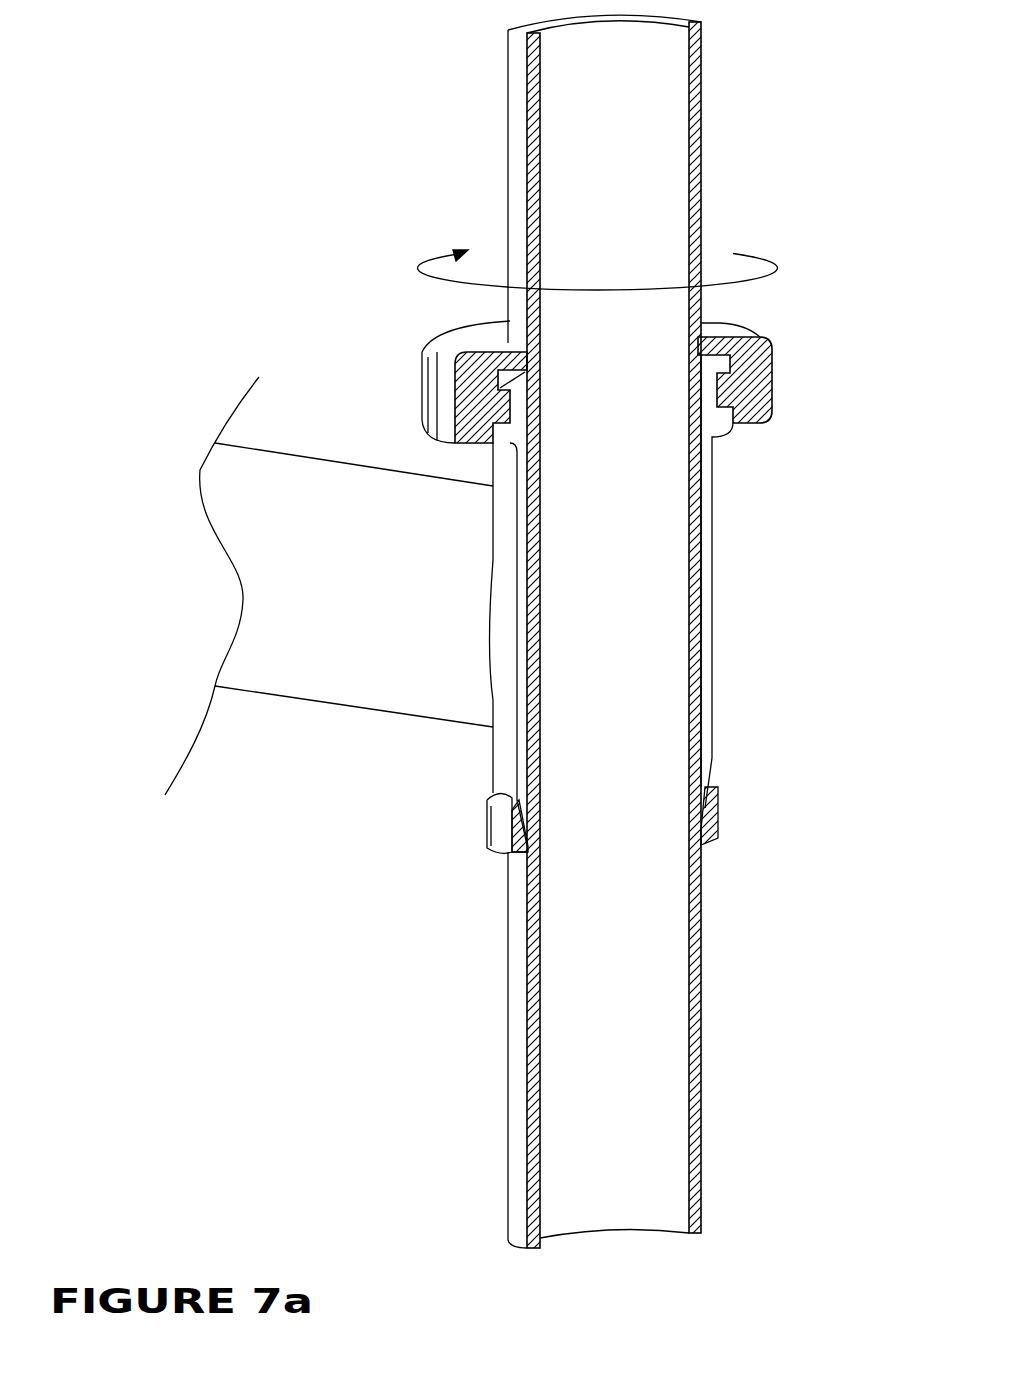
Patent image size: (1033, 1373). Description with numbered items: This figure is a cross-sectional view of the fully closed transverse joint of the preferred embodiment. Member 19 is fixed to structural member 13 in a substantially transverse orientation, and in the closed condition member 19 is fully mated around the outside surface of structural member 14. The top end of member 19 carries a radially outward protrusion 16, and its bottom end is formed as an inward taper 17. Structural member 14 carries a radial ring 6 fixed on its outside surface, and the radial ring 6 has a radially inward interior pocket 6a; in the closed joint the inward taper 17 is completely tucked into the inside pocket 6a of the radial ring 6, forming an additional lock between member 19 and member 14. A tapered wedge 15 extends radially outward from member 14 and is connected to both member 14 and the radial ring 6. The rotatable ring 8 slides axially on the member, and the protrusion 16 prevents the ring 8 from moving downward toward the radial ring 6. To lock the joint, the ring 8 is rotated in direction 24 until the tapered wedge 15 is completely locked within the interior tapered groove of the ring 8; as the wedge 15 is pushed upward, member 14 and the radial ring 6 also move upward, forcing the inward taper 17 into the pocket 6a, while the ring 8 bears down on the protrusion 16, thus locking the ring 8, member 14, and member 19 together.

The structural member 14 is at (608, 1205).
The rotatable ring 8 is at (440, 350).
The tapered wedge protrusion 15 is at (720, 357).
The radially outward protrusion 16 is at (718, 420).
The inward tapered end 17 is at (707, 805).
The transverse member 19 is at (493, 756).
The structural member 13 is at (267, 656).
The radial ring 6 is at (498, 827).
The interior pocket 6a is at (702, 838).
The direction of rotation 24 is at (597, 251).